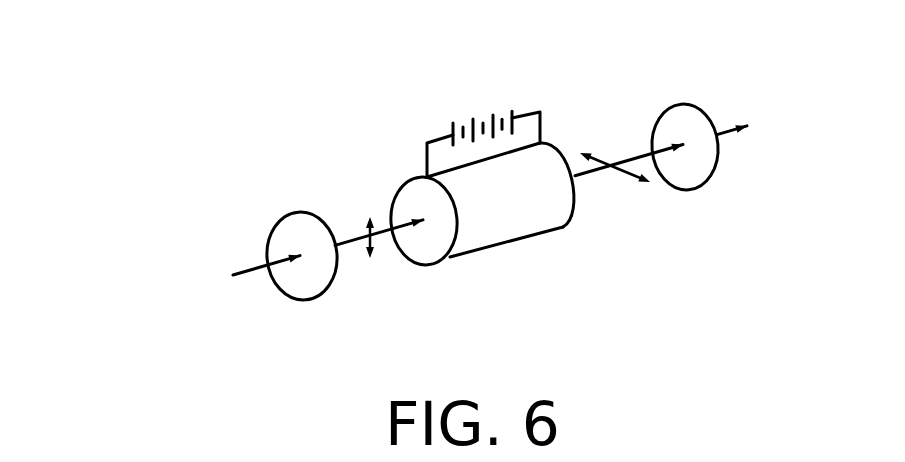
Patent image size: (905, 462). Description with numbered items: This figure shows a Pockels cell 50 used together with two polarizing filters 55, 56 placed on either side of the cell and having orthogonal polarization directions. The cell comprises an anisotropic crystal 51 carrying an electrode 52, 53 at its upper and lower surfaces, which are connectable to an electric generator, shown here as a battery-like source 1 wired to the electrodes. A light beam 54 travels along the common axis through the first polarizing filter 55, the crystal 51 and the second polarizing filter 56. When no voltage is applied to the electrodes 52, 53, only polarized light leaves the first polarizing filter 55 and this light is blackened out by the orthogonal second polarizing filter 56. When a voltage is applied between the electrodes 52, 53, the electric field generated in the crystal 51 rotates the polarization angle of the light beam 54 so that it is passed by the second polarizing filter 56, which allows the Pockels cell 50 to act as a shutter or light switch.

The light source / battery powered emitter 1 is at (423, 177).
The Pockels cell 50 is at (590, 296).
The anisotropic crystal 51 is at (563, 200).
The electrode 52 is at (437, 255).
The electrode 53 is at (575, 192).
The light beam 54 is at (355, 238).
The first polarizing filter 55 is at (305, 283).
The second polarizing filter 56 is at (685, 108).